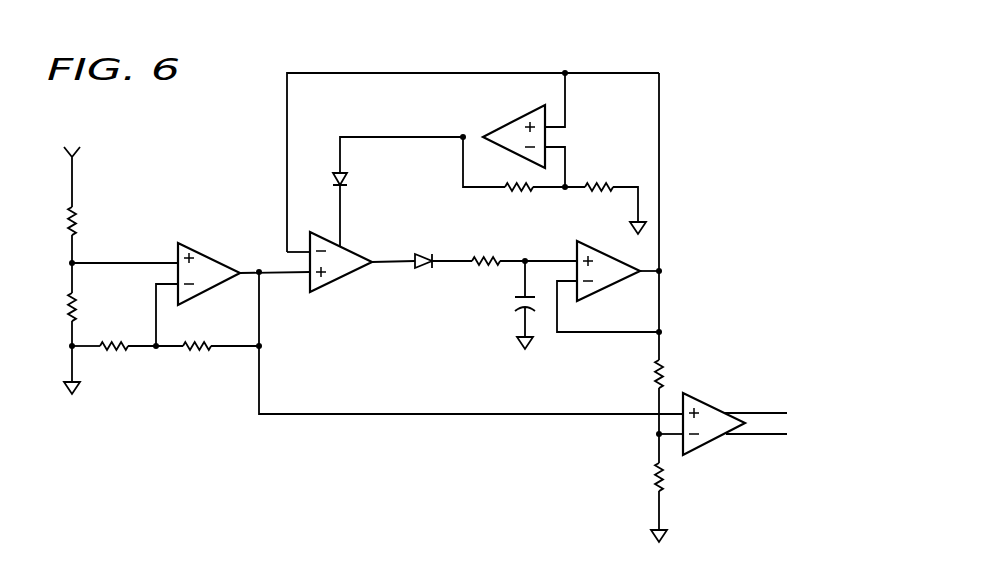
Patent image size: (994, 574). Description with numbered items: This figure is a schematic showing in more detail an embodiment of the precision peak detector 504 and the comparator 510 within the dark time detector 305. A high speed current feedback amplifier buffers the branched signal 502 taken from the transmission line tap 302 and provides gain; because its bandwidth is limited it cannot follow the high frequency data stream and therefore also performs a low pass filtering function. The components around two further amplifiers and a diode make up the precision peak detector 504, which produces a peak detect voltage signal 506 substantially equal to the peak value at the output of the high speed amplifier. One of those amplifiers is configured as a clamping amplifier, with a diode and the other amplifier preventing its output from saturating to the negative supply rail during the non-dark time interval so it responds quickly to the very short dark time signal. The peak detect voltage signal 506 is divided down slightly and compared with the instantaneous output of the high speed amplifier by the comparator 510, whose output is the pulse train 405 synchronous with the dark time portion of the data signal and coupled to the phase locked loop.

The transmission line tap 302 is at (70, 180).
The branched signal 502 is at (145, 253).
The precision peak detector 504 is at (515, 57).
The peak detect voltage signal 506 is at (680, 270).
The comparator 510 is at (733, 338).
The dark time detect signal 405 is at (773, 403).
The dark time detector 305 is at (318, 442).